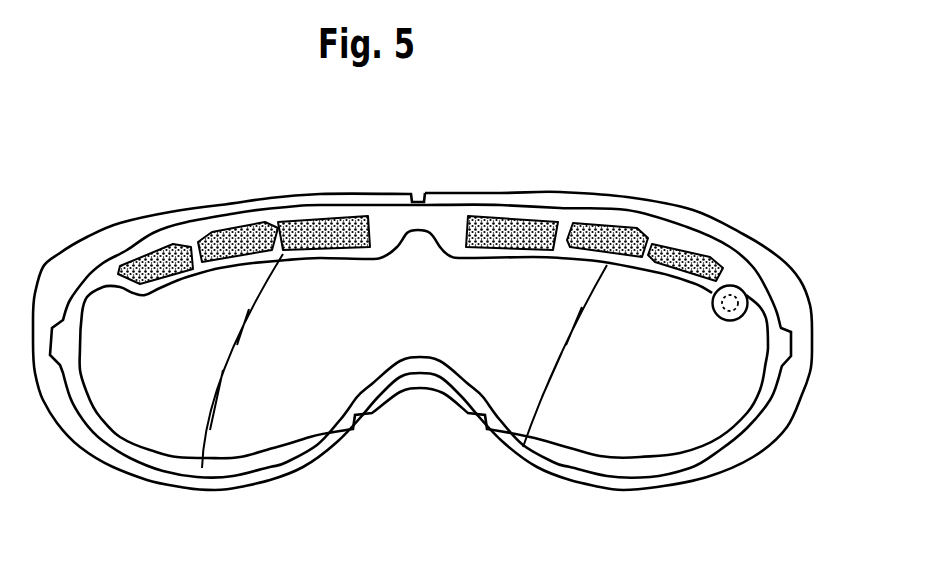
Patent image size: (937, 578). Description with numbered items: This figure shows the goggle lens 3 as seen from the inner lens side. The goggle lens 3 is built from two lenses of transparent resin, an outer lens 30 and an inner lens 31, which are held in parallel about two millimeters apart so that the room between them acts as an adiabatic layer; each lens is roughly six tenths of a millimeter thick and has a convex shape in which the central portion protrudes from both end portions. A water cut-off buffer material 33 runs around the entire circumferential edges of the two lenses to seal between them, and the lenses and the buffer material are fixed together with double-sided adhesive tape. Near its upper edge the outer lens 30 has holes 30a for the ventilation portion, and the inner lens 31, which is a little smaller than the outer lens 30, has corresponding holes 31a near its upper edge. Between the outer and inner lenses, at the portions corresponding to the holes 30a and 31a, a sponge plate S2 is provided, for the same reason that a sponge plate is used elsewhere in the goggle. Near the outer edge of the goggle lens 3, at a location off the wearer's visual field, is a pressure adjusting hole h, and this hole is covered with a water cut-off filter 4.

The goggle lens 3 is at (760, 228).
The outer lens 30 is at (814, 279).
The holes 30a is at (343, 218).
The inner lens 31 is at (687, 242).
The holes 31a is at (293, 223).
The water cut-off buffer material 33 is at (625, 466).
The water cut-off filter 4 is at (746, 291).
The sponge plate S2 is at (230, 232).
The pressure adjusting hole h is at (738, 320).